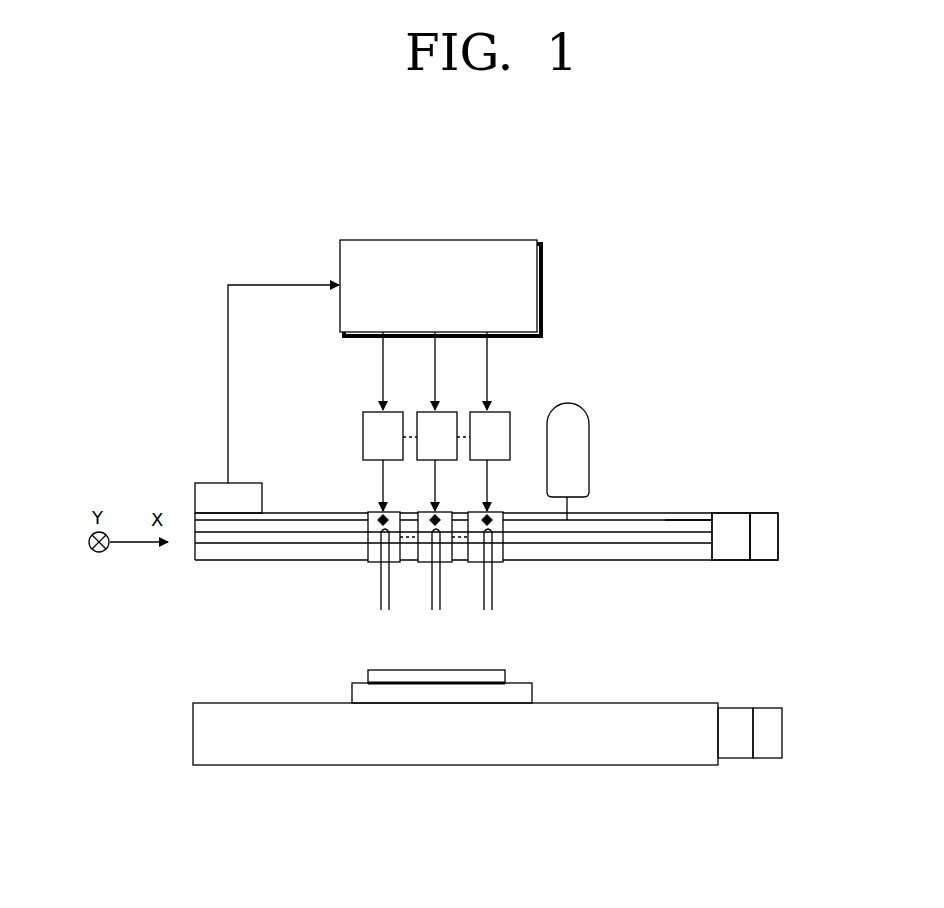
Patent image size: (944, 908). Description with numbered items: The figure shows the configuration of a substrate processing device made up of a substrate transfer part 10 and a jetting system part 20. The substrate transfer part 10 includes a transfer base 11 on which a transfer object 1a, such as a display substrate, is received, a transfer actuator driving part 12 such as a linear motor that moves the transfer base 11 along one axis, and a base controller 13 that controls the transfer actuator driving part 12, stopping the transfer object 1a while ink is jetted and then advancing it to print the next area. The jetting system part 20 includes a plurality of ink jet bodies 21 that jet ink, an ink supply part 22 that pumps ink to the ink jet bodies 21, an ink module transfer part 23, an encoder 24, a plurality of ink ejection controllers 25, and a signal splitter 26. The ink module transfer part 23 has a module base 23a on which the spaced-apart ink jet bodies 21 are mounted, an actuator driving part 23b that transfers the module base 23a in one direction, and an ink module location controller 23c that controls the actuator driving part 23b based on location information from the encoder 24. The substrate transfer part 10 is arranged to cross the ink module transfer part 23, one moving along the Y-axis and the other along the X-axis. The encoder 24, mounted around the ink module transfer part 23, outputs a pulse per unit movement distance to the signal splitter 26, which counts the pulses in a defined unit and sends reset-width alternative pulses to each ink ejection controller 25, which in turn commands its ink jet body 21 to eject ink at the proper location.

The transfer object 1a is at (472, 672).
The substrate transfer part 10 is at (500, 793).
The transfer base 11 is at (681, 752).
The transfer actuator driving part 12 is at (732, 748).
The base controller 13 is at (777, 770).
The jetting system part 20 is at (363, 509).
The ink jet body 21 is at (376, 565).
The ink supply part 22 is at (589, 445).
The ink module transfer part 23 is at (665, 427).
The module base 23a is at (678, 520).
The actuator driving part 23b is at (728, 520).
The ink module location controller 23c is at (766, 520).
The encoder 24 is at (208, 483).
The ink ejection controller 25 is at (366, 412).
The signal splitter 26 is at (466, 240).